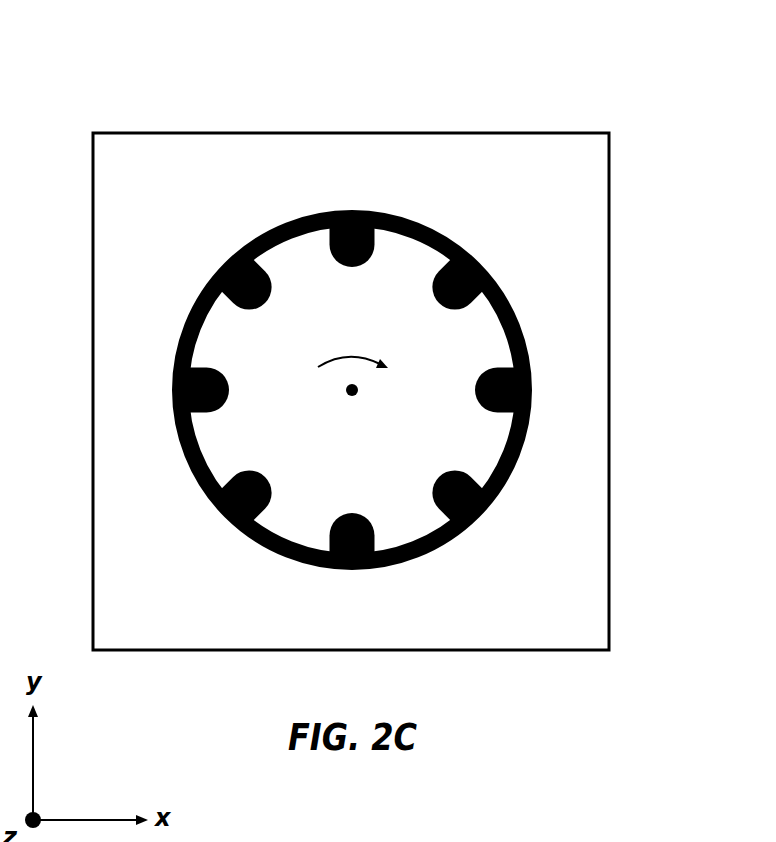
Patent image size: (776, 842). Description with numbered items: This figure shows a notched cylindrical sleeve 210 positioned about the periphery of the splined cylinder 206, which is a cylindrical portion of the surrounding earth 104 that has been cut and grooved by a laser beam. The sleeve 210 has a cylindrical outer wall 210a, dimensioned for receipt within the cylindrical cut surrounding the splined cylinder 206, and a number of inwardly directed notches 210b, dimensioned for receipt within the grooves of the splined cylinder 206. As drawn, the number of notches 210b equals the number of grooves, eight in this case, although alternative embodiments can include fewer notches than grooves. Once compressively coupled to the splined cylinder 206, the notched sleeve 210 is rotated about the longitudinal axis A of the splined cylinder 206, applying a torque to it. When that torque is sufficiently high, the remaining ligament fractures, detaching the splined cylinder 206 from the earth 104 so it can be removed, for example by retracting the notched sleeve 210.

The earth 104 is at (593, 638).
The splined cylinder 206 is at (375, 488).
The notched cylindrical sleeve 210 is at (323, 303).
The cylindrical outer wall 210a is at (288, 219).
The inwardly directed notches 210b is at (267, 290).